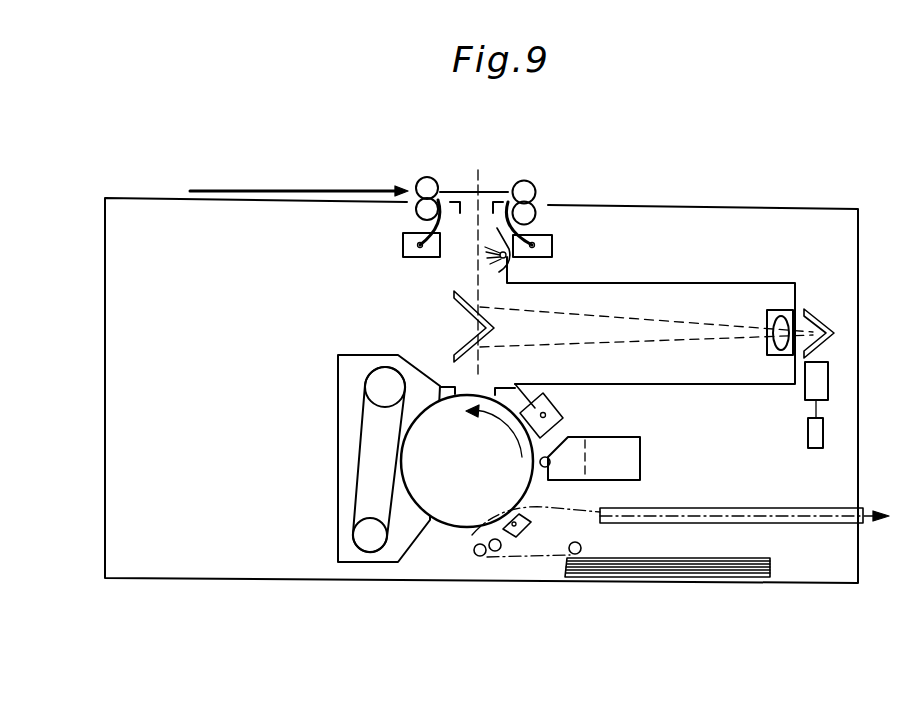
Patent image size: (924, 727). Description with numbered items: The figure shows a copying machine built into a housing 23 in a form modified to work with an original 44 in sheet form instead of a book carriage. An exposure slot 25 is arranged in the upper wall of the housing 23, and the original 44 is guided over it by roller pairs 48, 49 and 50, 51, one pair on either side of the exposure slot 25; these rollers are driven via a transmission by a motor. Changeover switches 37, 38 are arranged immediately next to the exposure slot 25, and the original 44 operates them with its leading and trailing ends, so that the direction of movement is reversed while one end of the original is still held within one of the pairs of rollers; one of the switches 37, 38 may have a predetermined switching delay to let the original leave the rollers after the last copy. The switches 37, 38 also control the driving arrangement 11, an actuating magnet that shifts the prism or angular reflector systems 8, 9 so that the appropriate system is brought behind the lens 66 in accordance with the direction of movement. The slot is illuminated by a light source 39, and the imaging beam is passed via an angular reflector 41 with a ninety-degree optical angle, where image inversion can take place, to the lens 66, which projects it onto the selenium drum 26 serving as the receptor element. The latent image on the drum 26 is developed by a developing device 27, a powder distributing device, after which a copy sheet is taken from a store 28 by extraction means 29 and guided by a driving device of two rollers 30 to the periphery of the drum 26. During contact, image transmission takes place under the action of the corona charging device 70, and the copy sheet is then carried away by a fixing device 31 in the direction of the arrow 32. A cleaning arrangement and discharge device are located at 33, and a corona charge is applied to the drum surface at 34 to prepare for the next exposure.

The housing 23 is at (104, 470).
The original 44 is at (281, 190).
The exposure slot 25 is at (470, 191).
The roller 48 is at (425, 177).
The roller 49 is at (415, 210).
The roller 50 is at (524, 180).
The roller 51 is at (537, 214).
The limit switch 37 is at (410, 250).
The limit switch 38 is at (553, 250).
The light source 39 is at (500, 257).
The angular reflector 41 is at (463, 310).
The lens 66 is at (769, 328).
The angular reflector system 9 is at (816, 316).
The angular reflector system 8 is at (829, 380).
The driving arrangement 11 is at (824, 433).
The developing device 27 is at (348, 425).
The selenium drum 26 is at (458, 510).
The corona charging point 34 is at (558, 405).
The cleaning arrangement and discharge device 33 is at (641, 456).
The corona charging device 70 is at (528, 528).
The rollers 30 is at (483, 556).
The extraction means 29 is at (578, 555).
The store 28 is at (702, 568).
The fixing device 31 is at (781, 510).
The arrow 32 is at (878, 526).